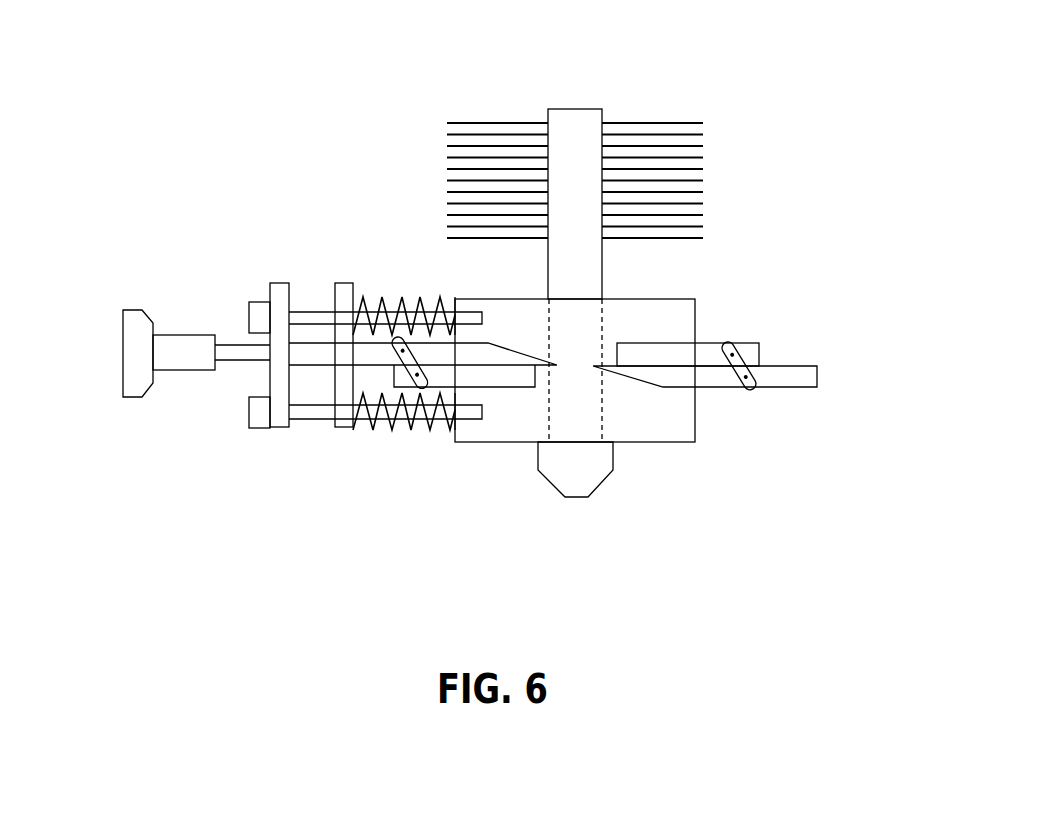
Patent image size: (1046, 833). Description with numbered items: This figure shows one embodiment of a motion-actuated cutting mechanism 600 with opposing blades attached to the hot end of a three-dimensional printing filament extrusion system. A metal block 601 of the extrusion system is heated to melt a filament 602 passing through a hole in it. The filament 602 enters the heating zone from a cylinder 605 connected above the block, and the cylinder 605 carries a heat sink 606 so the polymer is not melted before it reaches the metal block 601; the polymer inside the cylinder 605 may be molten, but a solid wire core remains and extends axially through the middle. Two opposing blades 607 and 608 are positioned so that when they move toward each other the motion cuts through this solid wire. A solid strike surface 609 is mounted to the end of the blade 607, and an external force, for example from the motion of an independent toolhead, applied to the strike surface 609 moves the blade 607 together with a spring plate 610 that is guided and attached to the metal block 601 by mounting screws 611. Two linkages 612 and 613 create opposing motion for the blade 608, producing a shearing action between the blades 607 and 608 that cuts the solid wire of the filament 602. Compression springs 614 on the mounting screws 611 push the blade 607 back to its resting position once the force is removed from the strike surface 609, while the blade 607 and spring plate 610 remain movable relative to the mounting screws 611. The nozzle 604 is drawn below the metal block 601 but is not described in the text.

The cutting mechanism 600 is at (128, 230).
The metal block 601 is at (668, 425).
The filament 602 is at (583, 332).
The nozzle 604 is at (588, 480).
The cylinder 605 is at (560, 108).
The heat sink 606 is at (448, 160).
The blade 607 is at (703, 342).
The blade 608 is at (782, 365).
The solid strike surface 609 is at (127, 353).
The spring plate 610 is at (342, 290).
The mounting screws 611 is at (248, 323).
The linkage 612 is at (750, 383).
The linkage 613 is at (420, 383).
The compression springs 614 is at (393, 330).